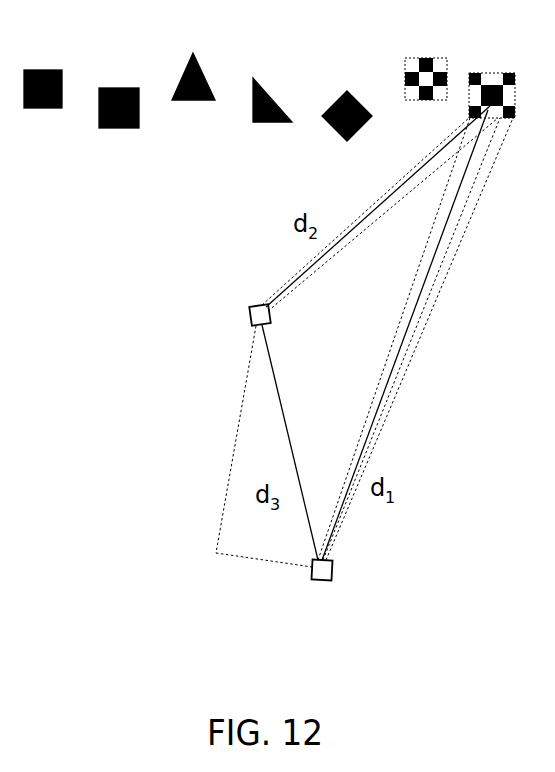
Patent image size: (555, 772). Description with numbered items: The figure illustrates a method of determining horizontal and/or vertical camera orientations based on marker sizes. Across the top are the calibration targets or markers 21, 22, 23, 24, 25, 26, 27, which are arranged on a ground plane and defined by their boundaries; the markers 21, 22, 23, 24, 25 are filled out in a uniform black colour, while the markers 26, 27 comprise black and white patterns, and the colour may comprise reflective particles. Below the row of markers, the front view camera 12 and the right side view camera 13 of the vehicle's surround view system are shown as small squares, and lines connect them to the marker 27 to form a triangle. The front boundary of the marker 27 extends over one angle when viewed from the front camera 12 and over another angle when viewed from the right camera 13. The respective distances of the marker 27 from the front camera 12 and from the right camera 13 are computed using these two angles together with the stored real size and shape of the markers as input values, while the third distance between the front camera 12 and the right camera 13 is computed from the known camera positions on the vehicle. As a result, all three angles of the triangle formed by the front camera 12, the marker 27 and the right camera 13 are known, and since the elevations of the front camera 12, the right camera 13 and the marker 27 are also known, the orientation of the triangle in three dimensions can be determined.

The marker 21 is at (43, 68).
The marker 22 is at (118, 85).
The marker 23 is at (205, 65).
The marker 24 is at (278, 103).
The marker 25 is at (352, 90).
The marker 26 is at (427, 57).
The marker 27 is at (493, 72).
The front view camera 12 is at (249, 315).
The right side view camera 13 is at (318, 582).